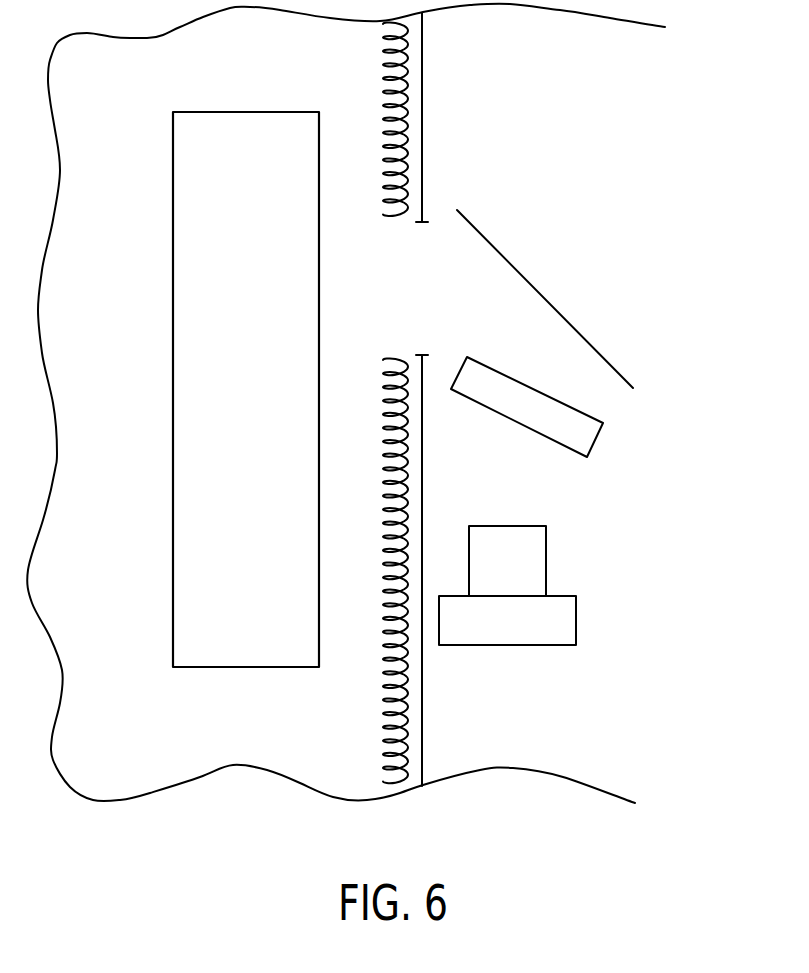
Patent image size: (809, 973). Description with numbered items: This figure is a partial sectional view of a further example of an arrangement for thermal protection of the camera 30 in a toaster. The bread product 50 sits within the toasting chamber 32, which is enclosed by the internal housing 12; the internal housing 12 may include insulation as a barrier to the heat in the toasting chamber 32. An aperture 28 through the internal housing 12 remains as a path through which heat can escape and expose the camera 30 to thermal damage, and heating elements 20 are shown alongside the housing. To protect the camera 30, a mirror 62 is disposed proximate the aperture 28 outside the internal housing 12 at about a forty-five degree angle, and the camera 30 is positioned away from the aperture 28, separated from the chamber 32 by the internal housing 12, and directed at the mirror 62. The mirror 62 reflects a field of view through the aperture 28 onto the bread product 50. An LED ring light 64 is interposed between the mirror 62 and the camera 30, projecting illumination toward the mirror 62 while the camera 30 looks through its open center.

The internal housing 12 is at (423, 703).
The coil 20 is at (384, 95).
The aperture 28 is at (372, 264).
The camera 30 is at (546, 560).
The toasting chamber 32 is at (135, 311).
The bread product 50 is at (260, 406).
The mirror 62 is at (541, 290).
The LED ring light 64 is at (598, 437).